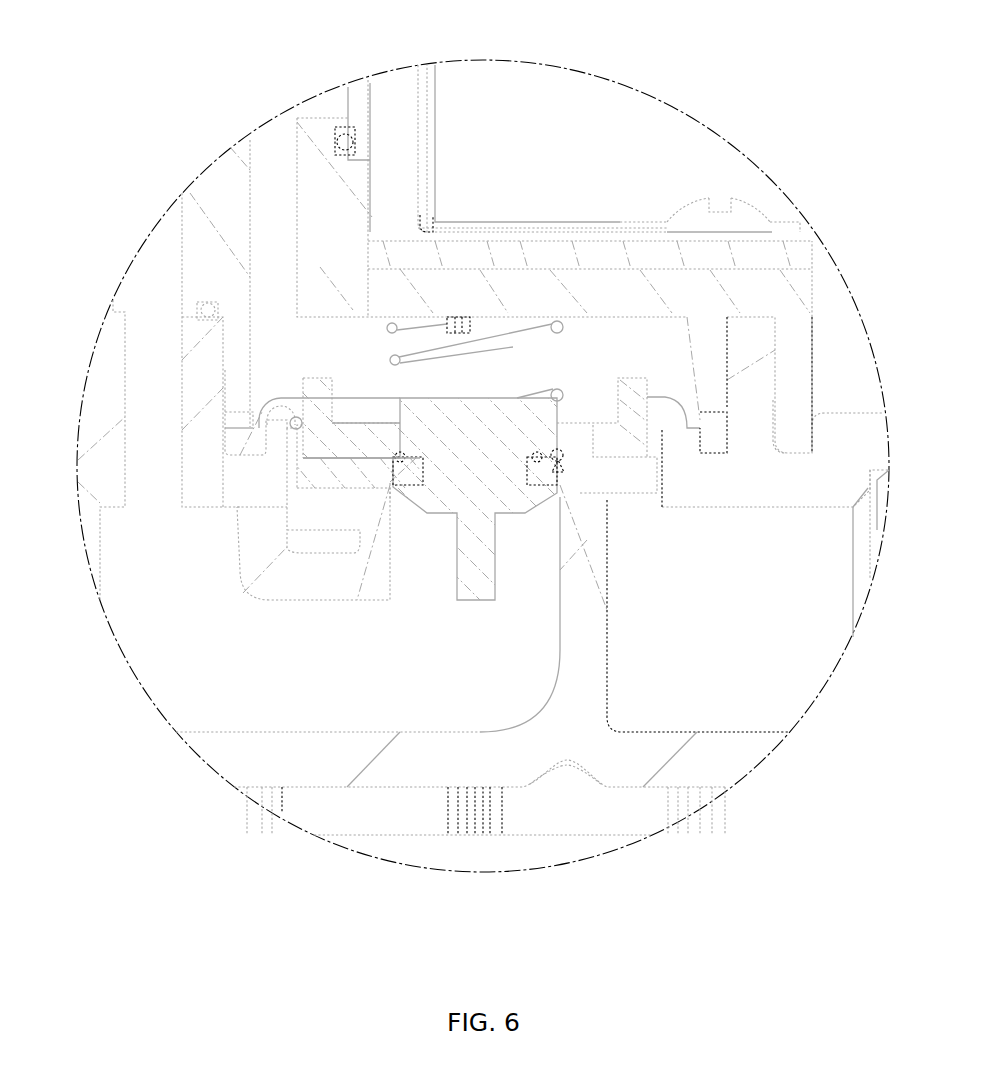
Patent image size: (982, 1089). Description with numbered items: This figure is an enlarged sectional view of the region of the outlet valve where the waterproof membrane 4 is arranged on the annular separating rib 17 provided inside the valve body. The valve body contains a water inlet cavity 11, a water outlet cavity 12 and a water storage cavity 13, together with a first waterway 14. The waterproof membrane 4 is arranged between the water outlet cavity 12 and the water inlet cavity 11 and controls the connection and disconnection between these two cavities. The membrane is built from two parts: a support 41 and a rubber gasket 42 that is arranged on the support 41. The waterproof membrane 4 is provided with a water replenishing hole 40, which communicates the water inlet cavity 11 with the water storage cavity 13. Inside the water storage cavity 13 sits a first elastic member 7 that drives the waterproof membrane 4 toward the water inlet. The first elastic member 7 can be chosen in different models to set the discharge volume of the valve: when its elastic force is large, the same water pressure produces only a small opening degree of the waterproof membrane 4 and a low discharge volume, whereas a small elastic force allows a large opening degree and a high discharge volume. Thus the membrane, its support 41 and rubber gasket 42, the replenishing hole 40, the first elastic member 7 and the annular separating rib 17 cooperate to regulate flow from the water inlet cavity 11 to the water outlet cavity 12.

The waterproof membrane 4 is at (286, 387).
The first elastic member 7 is at (390, 359).
The water inlet cavity 11 is at (735, 652).
The water outlet cavity 12 is at (375, 658).
The water storage cavity 13 is at (626, 345).
The first waterway 14 is at (268, 208).
The annular separating rib 17 is at (373, 530).
The water replenishing hole 40 is at (601, 455).
The support 41 is at (501, 432).
The rubber gasket 42 is at (340, 470).